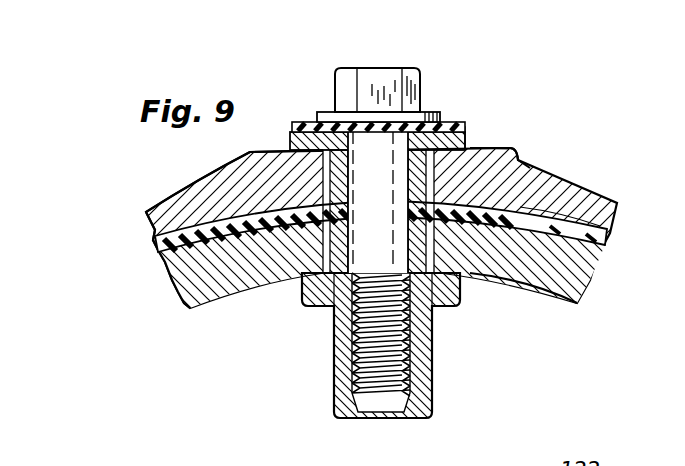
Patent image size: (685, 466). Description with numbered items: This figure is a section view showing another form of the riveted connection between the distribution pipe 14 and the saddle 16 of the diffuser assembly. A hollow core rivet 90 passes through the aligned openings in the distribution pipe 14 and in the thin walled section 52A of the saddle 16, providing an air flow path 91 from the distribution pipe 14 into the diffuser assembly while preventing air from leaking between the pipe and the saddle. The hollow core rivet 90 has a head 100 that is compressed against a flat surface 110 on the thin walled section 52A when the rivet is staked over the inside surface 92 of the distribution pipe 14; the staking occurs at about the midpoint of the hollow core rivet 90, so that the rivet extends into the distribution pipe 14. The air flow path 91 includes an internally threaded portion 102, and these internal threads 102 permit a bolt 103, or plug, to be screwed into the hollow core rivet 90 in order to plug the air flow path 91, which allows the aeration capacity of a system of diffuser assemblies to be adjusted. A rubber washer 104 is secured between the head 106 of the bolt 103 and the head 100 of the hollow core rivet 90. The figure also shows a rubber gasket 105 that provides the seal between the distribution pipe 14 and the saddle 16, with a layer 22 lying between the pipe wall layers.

The distribution pipe 14 is at (227, 270).
The saddle 16 is at (225, 190).
The intermediate gasket layer 22 is at (576, 241).
The thin walled section 52A is at (172, 208).
The hollow core rivet 90 is at (291, 134).
The air flow path 91 is at (358, 412).
The inside surface 92 is at (543, 297).
The head 100 is at (468, 132).
The internally threaded portion 102 is at (407, 412).
The bolt 103 is at (388, 130).
The rubber washer 104 is at (302, 122).
The rubber gasket 105 is at (553, 218).
The head 106 is at (384, 80).
The flat surface 110 is at (508, 137).